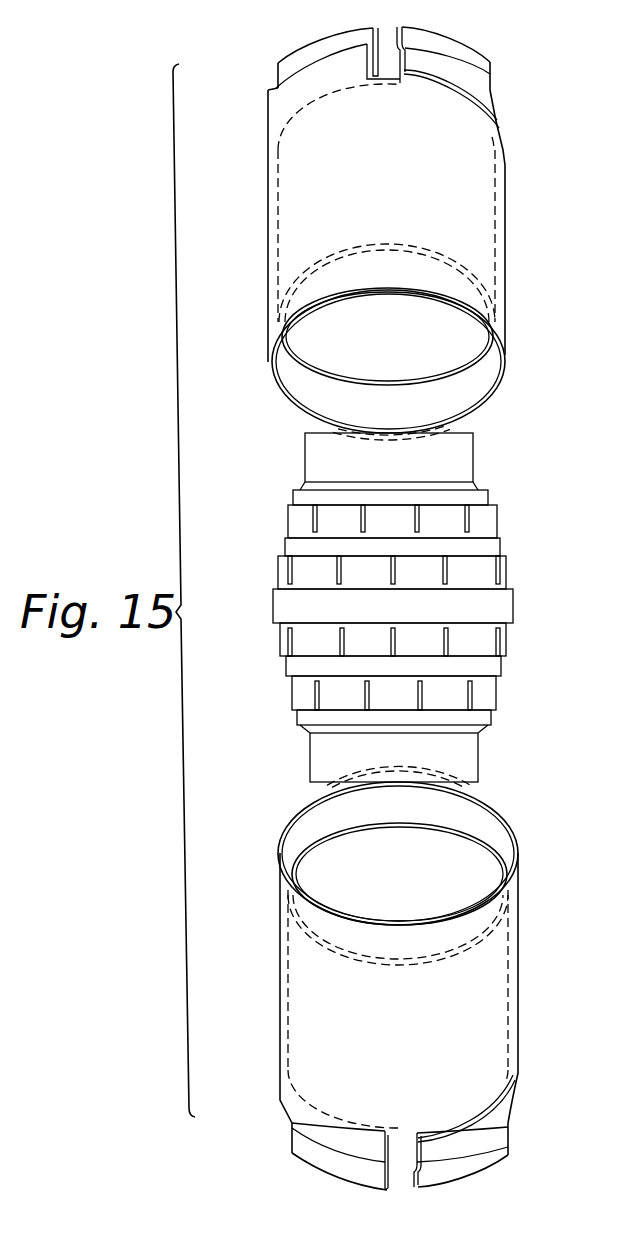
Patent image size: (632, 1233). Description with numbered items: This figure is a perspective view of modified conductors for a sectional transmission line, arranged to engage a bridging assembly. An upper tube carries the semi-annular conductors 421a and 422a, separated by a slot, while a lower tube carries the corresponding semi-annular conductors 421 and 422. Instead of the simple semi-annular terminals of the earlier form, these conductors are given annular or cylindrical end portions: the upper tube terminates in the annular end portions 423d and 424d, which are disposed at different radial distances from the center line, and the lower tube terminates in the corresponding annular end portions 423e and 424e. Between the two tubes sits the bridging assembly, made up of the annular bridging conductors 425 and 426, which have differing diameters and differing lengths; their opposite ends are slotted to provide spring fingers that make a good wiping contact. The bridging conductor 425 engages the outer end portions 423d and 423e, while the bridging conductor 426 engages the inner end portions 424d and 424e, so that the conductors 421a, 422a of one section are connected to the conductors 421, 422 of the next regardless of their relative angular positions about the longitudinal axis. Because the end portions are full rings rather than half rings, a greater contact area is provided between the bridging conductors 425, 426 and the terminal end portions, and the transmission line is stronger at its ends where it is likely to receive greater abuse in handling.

The semi-annular conductor 421a is at (285, 63).
The semi-annular conductor 422a is at (486, 69).
The annular end portion 423d is at (277, 393).
The annular end portion 424d is at (473, 363).
The annular bridging conductor 425 is at (507, 638).
The annular bridging conductor 426 is at (290, 690).
The outer ring (lower tube) 423e is at (283, 827).
The inner ring (lower tube) 424e is at (475, 842).
The semi-annular conductor 421 is at (298, 1145).
The semi-annular conductor 422 is at (502, 1142).